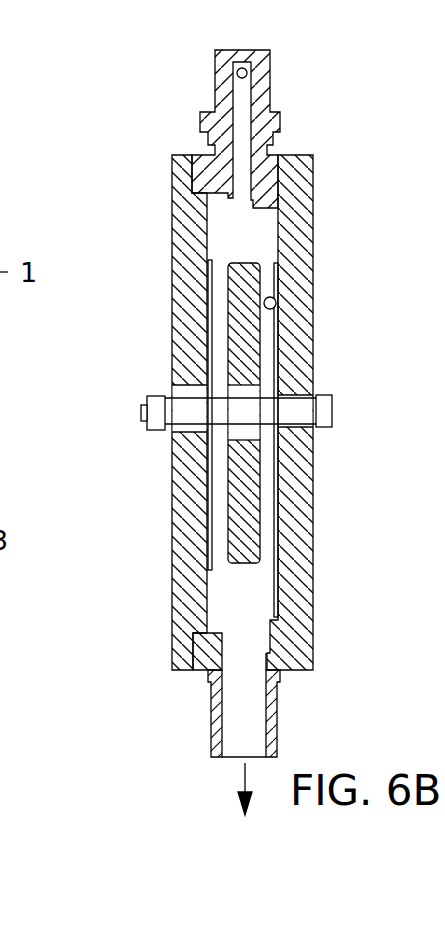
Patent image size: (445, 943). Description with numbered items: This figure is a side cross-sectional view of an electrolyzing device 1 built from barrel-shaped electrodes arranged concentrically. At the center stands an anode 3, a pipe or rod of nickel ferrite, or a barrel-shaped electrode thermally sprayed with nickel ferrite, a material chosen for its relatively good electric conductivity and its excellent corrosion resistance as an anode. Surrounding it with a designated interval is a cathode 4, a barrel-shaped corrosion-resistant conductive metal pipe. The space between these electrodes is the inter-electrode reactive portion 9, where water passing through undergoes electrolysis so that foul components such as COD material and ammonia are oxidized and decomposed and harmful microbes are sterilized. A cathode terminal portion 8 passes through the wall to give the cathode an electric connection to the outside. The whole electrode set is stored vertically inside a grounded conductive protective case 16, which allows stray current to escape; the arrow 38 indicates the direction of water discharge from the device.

The electrolyzing device 1 is at (241, 449).
The anode 3 is at (250, 258).
The cathode 4 is at (274, 298).
The cathode terminal portion 8 is at (141, 413).
The inter-electrode reactive portion 9 is at (222, 483).
The conductive protective case 16 is at (168, 177).
The outlet flow direction 38 is at (240, 805).